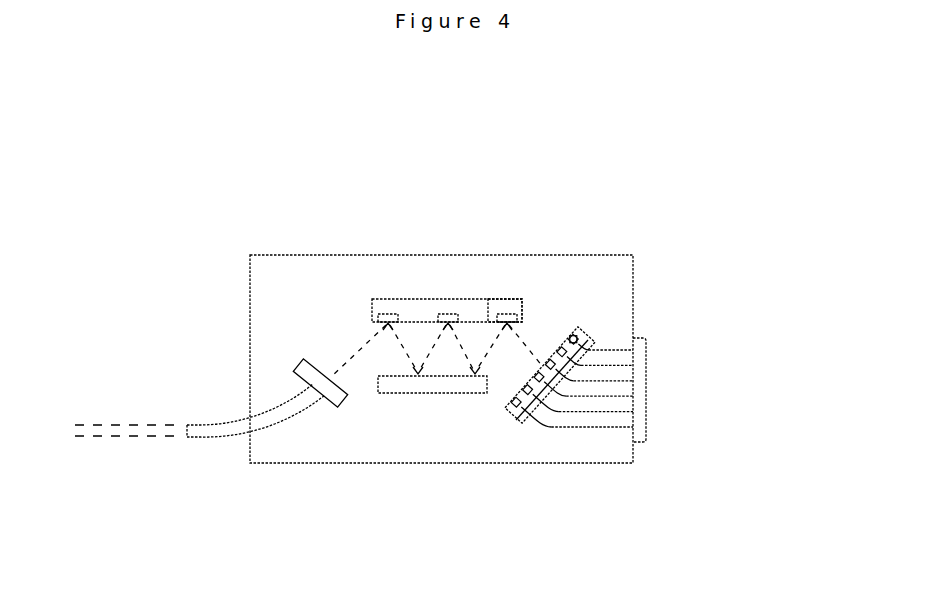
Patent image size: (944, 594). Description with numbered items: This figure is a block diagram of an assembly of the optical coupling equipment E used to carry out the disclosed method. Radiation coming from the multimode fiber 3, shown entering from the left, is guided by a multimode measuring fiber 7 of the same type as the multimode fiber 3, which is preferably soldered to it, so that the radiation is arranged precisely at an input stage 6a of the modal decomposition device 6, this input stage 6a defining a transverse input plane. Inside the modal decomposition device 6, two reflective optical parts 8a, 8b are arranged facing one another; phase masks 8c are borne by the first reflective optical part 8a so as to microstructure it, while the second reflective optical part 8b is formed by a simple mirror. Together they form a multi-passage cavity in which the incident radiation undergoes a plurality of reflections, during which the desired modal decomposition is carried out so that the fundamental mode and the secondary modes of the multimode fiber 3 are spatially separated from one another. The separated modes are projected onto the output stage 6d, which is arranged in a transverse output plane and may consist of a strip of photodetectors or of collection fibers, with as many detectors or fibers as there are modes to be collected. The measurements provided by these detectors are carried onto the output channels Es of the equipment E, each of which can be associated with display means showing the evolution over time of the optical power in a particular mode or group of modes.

The multimode fiber 3 is at (122, 412).
The multimode measuring fiber 7 is at (208, 438).
The modal decomposition device 6 is at (431, 464).
The input stage 6a is at (300, 363).
The output stage 6d is at (523, 424).
The reflective optical part 8a is at (392, 299).
The second reflective optical part 8b is at (403, 393).
The phase masks 8c is at (510, 299).
The optical coupling equipment E is at (443, 195).
The output channels Es is at (683, 402).